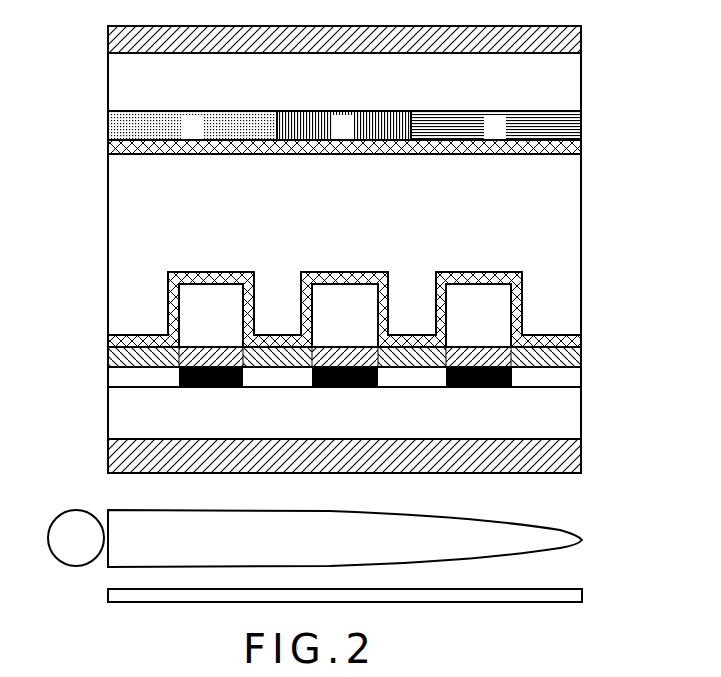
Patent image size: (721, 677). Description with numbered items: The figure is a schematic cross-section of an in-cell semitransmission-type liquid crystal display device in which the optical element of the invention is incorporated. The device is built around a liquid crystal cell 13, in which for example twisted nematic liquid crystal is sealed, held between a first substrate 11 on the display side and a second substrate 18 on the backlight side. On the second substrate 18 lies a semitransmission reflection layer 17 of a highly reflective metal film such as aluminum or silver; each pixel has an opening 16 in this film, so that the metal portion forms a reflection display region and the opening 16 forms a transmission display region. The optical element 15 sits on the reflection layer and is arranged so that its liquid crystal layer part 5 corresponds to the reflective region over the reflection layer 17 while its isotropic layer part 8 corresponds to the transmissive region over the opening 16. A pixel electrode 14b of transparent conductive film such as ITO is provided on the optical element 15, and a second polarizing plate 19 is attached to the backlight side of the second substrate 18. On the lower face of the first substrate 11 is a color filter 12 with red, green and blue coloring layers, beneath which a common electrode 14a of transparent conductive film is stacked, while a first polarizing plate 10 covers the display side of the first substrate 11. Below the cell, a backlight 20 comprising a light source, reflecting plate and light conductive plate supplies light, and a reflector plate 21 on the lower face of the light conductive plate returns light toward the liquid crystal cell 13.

The liquid crystal layer part 5 is at (212, 348).
The isotropic layer part 8 is at (112, 358).
The first polarizing plate 10 is at (590, 41).
The first substrate 11 is at (570, 82).
The color filter 12 is at (576, 127).
The liquid crystal cell 13 is at (108, 192).
The common electrode 14a is at (578, 146).
The pixel electrode 14b is at (577, 340).
The optical element 15 is at (577, 357).
The opening 16 is at (573, 378).
The semitransmission reflection layer 17 is at (480, 387).
The second substrate 18 is at (108, 412).
The second polarizing plate 19 is at (112, 458).
The backlight 20 is at (558, 548).
The reflector plate 21 is at (563, 597).